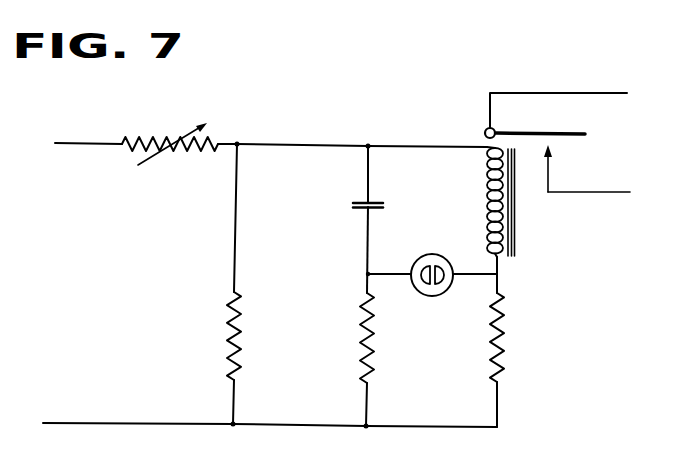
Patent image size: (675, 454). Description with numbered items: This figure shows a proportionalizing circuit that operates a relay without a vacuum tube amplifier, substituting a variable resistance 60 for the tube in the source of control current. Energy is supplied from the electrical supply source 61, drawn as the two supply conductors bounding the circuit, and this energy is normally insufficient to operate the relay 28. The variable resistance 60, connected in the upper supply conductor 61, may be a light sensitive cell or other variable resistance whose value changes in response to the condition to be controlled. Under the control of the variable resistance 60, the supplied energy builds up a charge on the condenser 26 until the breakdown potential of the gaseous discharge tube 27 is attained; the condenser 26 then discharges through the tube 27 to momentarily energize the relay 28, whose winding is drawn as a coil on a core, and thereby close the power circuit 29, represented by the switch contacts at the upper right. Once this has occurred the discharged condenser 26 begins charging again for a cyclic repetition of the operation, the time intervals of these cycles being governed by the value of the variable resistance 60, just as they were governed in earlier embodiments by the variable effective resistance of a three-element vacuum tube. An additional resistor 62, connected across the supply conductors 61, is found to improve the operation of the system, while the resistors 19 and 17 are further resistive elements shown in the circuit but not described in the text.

The resistor 17 is at (488, 345).
The resistor 19 is at (375, 340).
The condenser 26 is at (383, 209).
The gaseous discharge tube 27 is at (455, 248).
The relay 28 is at (516, 227).
The power circuit 29 is at (607, 178).
The variable resistance 60 is at (150, 113).
The electrical supply source 61 is at (94, 143).
The additional resistor 62 is at (241, 338).